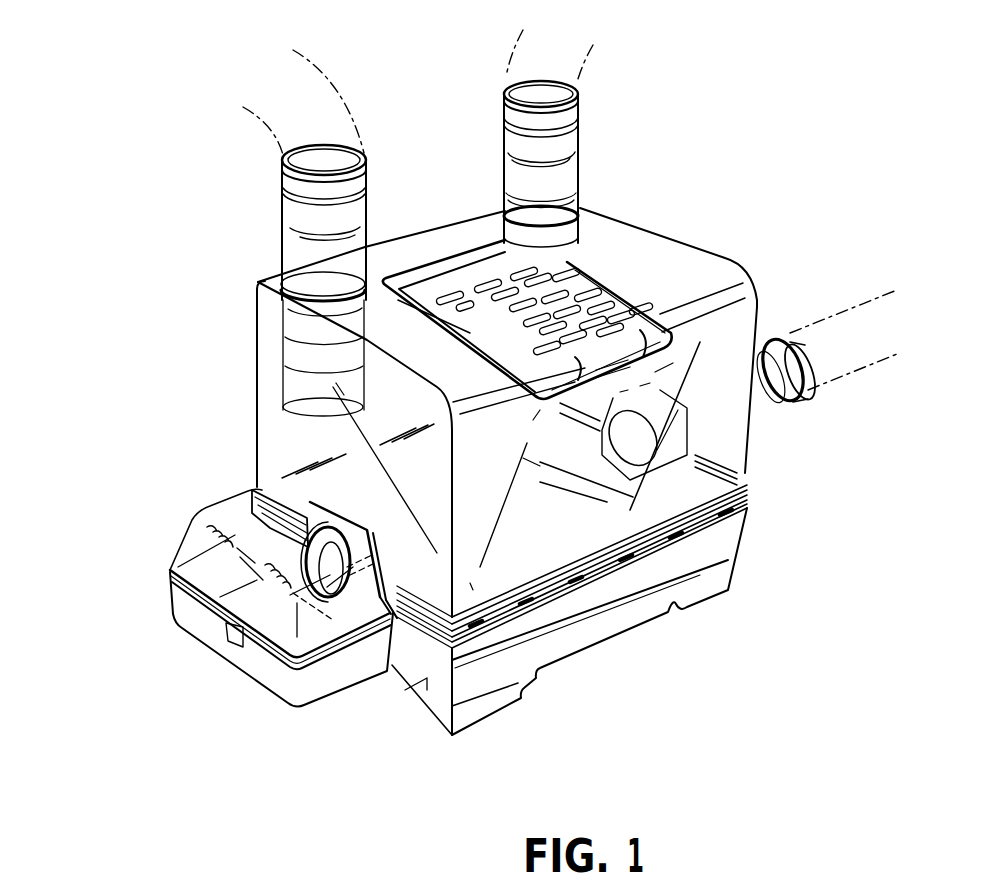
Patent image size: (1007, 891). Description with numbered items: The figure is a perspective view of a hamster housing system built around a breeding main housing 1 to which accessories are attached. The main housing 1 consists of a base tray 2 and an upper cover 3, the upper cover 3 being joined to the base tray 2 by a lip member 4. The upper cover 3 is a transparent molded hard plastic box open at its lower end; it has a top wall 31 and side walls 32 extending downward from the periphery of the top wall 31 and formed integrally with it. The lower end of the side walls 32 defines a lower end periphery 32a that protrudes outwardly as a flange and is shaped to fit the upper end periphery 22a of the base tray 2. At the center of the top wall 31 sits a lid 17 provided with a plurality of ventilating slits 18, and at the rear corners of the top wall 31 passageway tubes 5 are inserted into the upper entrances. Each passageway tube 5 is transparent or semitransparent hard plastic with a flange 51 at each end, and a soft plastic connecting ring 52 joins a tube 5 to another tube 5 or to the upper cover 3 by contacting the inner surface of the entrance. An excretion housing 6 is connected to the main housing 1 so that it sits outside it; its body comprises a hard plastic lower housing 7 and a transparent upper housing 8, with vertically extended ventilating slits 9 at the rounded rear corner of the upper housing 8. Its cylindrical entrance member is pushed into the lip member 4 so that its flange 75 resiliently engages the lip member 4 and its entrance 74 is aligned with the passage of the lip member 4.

The breeding main housing 1 is at (747, 190).
The base tray 2 is at (727, 537).
The upper cover 3 is at (733, 270).
The lip member 4 is at (340, 505).
The passageway tube 5 is at (350, 213).
The excretion housing 6 is at (160, 528).
The lower housing 7 is at (277, 680).
The upper housing 8 is at (207, 520).
The ventilating slits 9 is at (275, 592).
The lid 17 is at (490, 320).
The slots 18 is at (577, 287).
The upper end periphery 22a is at (587, 580).
The top wall 31 is at (670, 262).
The side walls 32 is at (277, 443).
The lower end periphery 32a is at (553, 580).
The flange 51 is at (283, 162).
The connecting ring 52 is at (327, 293).
The entrance 74 is at (331, 612).
The flange 75 is at (403, 557).